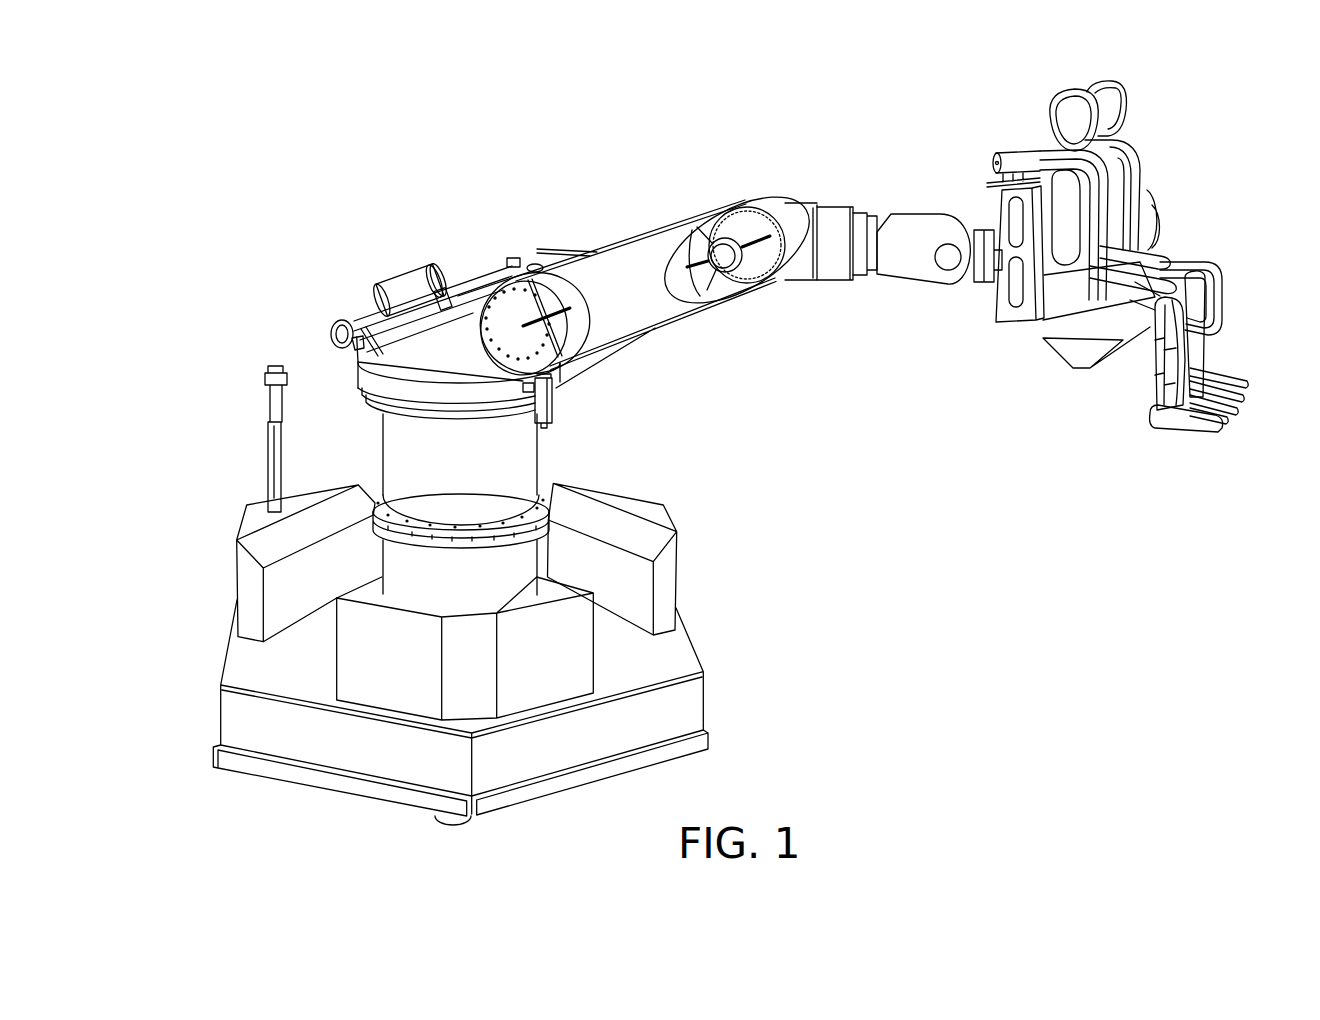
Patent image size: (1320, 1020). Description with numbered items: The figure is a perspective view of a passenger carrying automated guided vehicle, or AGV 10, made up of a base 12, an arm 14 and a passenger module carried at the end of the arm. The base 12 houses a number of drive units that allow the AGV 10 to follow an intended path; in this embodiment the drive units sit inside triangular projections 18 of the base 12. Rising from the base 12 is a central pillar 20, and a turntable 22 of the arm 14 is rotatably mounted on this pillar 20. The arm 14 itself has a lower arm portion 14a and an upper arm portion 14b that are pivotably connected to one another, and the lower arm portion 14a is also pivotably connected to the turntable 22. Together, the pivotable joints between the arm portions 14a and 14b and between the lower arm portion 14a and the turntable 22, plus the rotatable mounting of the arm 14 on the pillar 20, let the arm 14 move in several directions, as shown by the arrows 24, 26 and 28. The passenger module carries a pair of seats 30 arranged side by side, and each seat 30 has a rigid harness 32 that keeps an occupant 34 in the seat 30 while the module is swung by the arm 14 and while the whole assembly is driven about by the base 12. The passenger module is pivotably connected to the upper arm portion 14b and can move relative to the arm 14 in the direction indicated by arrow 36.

The automated guided vehicle (AGV) 10 is at (911, 408).
The base 12 is at (307, 748).
The arm 14 is at (612, 225).
The lower arm portion 14a is at (637, 318).
The upper arm portion 14b is at (833, 273).
The triangular projections 18 is at (263, 547).
The central pillar 20 is at (479, 479).
The turntable 22 is at (367, 377).
The arrow 24 is at (497, 452).
The arrow 26 is at (568, 231).
The arrow 28 is at (763, 307).
The seat 30 is at (1078, 327).
The rigid harness 32 is at (1027, 150).
The occupant 34 is at (1068, 96).
The arrow 36 is at (872, 323).